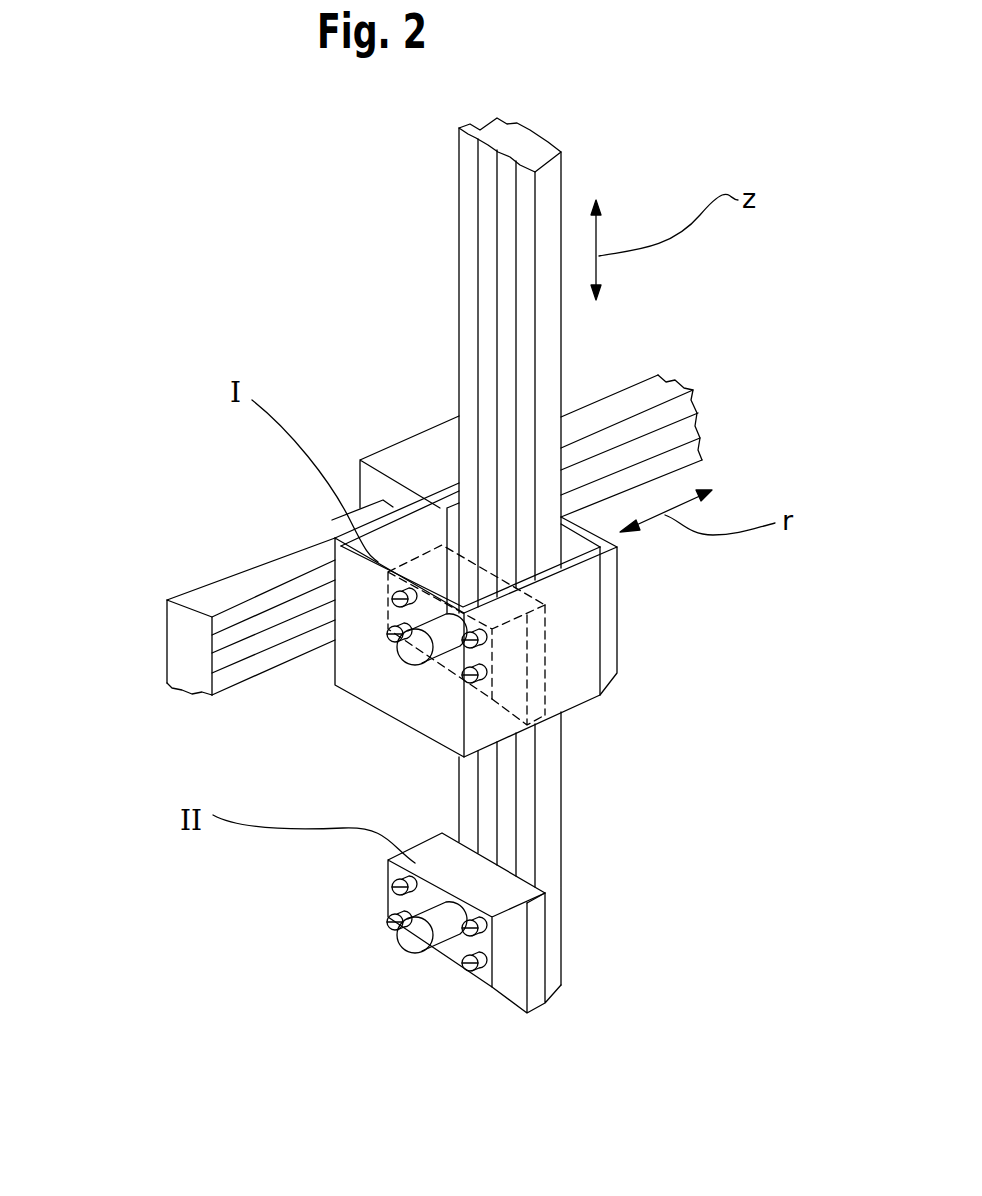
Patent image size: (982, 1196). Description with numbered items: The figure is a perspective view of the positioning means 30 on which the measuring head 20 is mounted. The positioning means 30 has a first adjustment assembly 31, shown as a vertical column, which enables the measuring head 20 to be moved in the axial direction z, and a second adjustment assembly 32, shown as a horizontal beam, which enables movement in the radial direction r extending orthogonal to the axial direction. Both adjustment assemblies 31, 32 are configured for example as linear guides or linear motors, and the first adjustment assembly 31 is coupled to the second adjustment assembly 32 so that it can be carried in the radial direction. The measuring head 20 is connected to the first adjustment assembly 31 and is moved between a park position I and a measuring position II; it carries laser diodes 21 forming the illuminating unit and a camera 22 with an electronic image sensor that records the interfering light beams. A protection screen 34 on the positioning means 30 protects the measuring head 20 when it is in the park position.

The measuring head 20 is at (578, 650).
The laser diodes 21 is at (390, 889).
The camera 22 is at (406, 948).
The positioning means 30 is at (328, 272).
The first adjustment assembly 31 is at (550, 785).
The second adjustment assembly 32 is at (648, 398).
The protection screen 34 is at (365, 640).